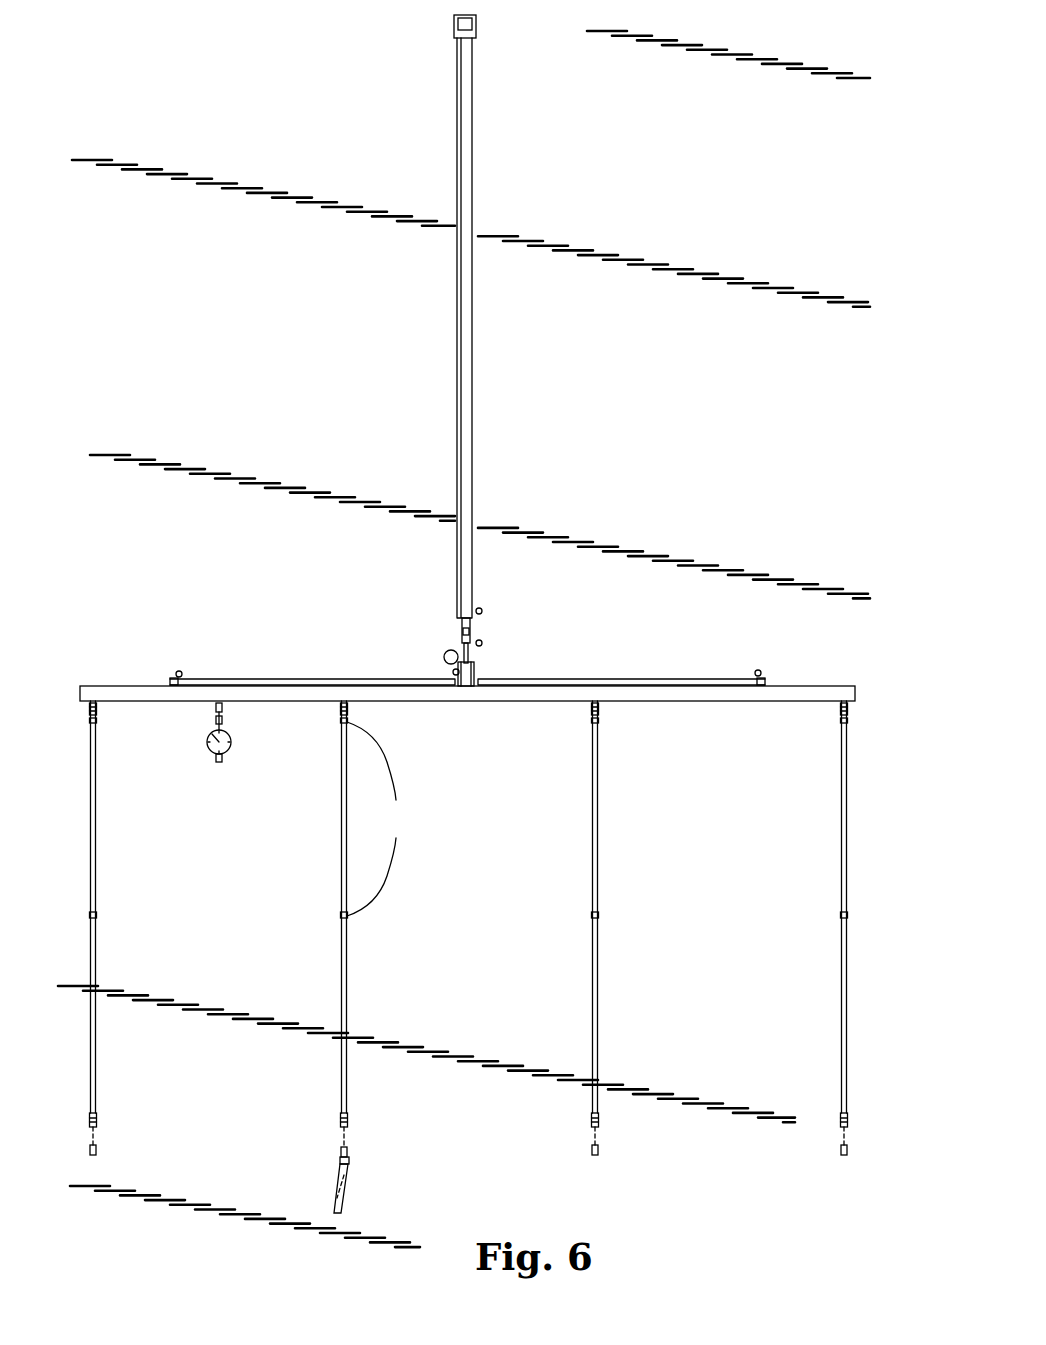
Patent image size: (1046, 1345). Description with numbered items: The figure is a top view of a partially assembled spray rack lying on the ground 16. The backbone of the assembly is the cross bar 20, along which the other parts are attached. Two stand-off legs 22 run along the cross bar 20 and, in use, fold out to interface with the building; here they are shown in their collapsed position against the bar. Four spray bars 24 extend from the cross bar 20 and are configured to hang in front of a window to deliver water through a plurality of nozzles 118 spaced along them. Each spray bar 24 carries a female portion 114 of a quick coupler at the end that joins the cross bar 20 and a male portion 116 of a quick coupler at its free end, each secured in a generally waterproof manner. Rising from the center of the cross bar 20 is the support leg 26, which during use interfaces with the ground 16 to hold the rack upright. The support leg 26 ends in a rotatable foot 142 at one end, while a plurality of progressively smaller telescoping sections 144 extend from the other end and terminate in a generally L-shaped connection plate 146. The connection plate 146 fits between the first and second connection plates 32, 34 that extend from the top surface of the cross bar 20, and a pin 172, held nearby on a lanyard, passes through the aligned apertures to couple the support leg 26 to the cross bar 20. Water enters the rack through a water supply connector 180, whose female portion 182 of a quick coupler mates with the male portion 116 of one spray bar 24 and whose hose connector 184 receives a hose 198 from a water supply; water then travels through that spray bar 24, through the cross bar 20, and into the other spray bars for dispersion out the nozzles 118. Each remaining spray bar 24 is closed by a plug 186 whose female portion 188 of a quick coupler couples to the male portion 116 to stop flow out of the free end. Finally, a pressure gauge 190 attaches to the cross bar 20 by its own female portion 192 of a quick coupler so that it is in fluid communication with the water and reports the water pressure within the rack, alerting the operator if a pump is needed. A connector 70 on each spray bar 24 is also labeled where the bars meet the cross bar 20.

The ground 16 is at (314, 333).
The cross bar 20 is at (800, 688).
The stand-off legs 22 is at (262, 678).
The spray bars 24 is at (96, 843).
The support leg 26 is at (472, 481).
The first connection plate 32 is at (445, 650).
The second connection plate 34 is at (475, 677).
The connector 70 is at (97, 710).
The female portion of quick coupler 114 is at (97, 722).
The male portion of quick coupler 116 is at (97, 1120).
The nozzles 118 is at (393, 819).
The foot 142 is at (476, 25).
The telescoping sections 144 is at (486, 628).
The connection plate 146 is at (472, 662).
The pin 172 is at (453, 672).
The water supply connector 180 is at (346, 1159).
The female portion of quick coupler 182 is at (342, 1152).
The hose connector 184 is at (310, 1170).
The plug 186 is at (97, 1150).
The female portion of quick coupler 188 is at (90, 1150).
The pressure gauge 190 is at (229, 750).
The female portion of quick coupler 192 is at (223, 721).
The hose 198 is at (348, 1200).